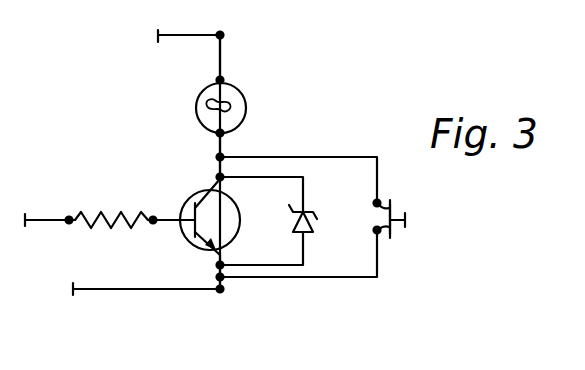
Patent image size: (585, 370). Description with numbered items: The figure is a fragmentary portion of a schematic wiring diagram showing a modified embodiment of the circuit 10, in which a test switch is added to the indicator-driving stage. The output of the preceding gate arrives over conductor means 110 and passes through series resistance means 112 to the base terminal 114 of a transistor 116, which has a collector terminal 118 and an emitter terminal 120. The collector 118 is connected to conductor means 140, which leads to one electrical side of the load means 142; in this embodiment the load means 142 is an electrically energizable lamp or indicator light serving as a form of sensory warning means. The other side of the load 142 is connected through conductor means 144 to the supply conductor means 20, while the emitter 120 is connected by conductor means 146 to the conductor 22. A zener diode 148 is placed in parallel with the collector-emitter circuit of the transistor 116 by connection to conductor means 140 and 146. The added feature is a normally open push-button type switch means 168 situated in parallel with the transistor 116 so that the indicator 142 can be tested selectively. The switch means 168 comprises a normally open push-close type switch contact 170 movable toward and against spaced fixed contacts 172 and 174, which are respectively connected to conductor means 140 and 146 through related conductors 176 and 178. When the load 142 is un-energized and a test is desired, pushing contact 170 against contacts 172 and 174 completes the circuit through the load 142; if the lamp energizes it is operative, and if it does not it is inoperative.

The lamp control circuit 10 is at (174, 116).
The conductor means 20 is at (190, 35).
The conductor 22 is at (100, 289).
The conductor means 110 is at (35, 220).
The series resistance means 112 is at (88, 225).
The base terminal 114 is at (192, 210).
The transistor 116 is at (249, 212).
The collector terminal 118 is at (202, 192).
The emitter terminal 120 is at (203, 240).
The conductor means 140 is at (223, 154).
The electrical load means 142 is at (250, 98).
The conductor means 144 is at (222, 61).
The conductor means 146 is at (224, 284).
The zener diode 148 is at (298, 233).
The switch means 168 is at (409, 207).
The switch contact 170 is at (388, 215).
The fixed contact 172 is at (378, 202).
The fixed contact 174 is at (380, 233).
The conductor 176 is at (312, 157).
The conductor 178 is at (342, 277).